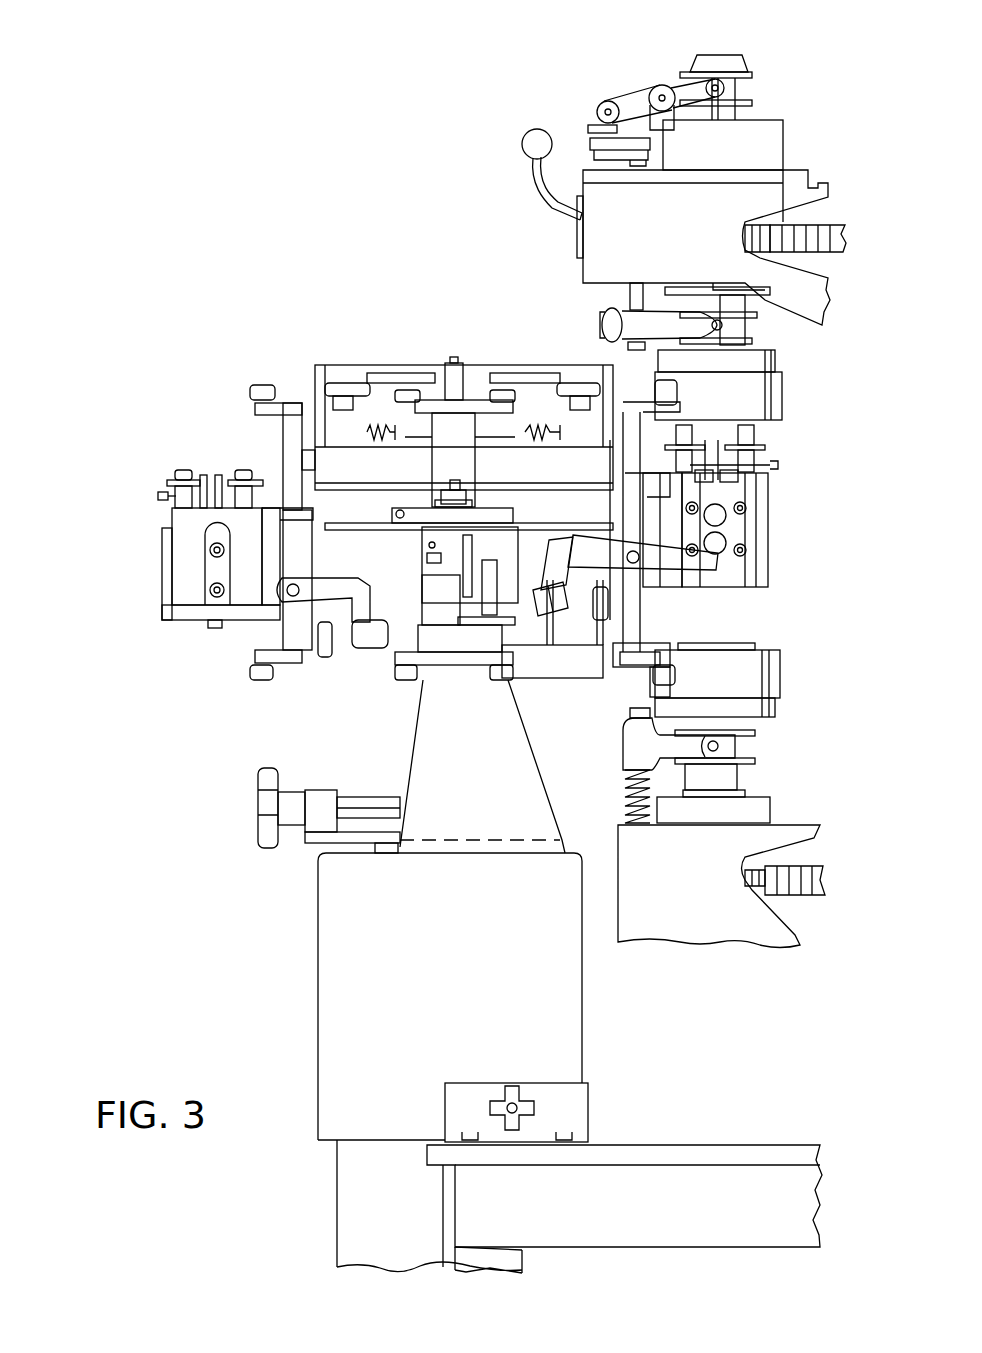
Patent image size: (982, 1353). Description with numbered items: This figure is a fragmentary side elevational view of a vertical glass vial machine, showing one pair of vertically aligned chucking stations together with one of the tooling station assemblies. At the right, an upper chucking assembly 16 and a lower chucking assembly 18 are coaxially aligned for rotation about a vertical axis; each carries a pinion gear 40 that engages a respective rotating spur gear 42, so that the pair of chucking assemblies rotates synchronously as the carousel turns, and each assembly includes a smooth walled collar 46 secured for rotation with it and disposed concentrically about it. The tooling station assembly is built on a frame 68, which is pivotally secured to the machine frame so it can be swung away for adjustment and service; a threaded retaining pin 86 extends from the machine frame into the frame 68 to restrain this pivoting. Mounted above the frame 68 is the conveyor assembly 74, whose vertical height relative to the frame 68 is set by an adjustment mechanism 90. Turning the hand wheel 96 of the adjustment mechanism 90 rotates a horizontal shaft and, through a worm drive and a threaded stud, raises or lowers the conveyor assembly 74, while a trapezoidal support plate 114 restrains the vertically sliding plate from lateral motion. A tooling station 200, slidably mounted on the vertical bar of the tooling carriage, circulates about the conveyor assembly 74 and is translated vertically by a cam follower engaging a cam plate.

The upper chucking assembly 16 is at (551, 327).
The lower chucking assembly 18 is at (822, 715).
The pinion gear 40 is at (770, 222).
The spur gear 42 is at (828, 224).
The smooth walled collar 46 is at (770, 388).
The frame 68 is at (460, 967).
The conveyor assembly 74 is at (296, 291).
The threaded retaining pin 86 is at (538, 1108).
The adjustment mechanism 90 is at (281, 745).
The hand wheel 96 is at (262, 843).
The trapezoidal support plate 114 is at (482, 779).
The tooling station 200 is at (146, 445).